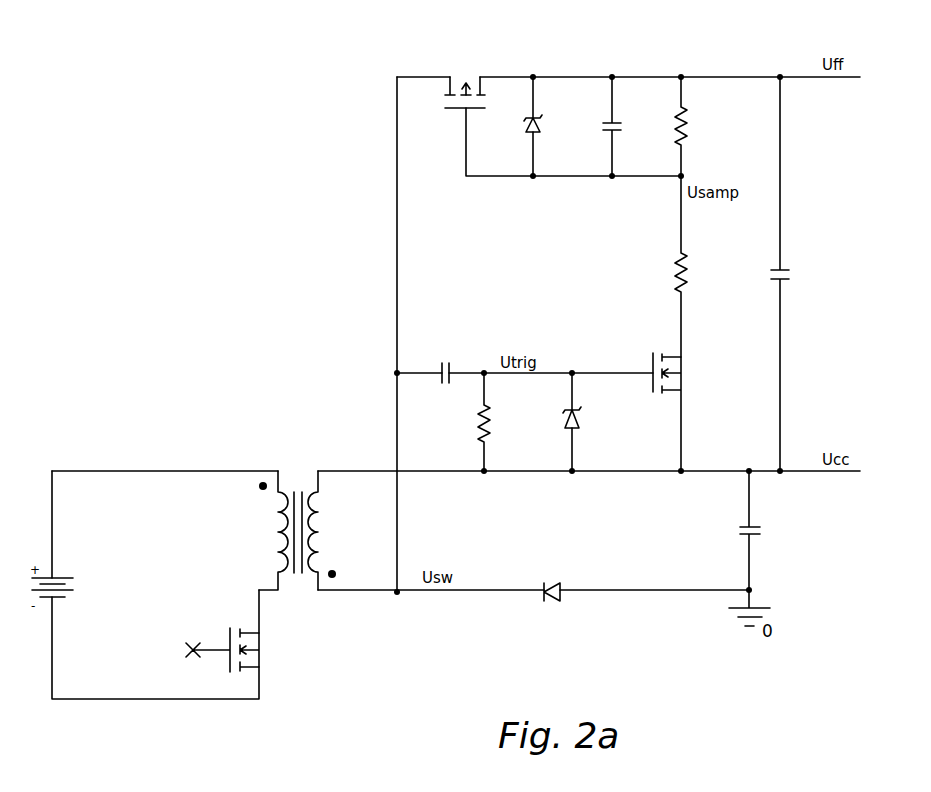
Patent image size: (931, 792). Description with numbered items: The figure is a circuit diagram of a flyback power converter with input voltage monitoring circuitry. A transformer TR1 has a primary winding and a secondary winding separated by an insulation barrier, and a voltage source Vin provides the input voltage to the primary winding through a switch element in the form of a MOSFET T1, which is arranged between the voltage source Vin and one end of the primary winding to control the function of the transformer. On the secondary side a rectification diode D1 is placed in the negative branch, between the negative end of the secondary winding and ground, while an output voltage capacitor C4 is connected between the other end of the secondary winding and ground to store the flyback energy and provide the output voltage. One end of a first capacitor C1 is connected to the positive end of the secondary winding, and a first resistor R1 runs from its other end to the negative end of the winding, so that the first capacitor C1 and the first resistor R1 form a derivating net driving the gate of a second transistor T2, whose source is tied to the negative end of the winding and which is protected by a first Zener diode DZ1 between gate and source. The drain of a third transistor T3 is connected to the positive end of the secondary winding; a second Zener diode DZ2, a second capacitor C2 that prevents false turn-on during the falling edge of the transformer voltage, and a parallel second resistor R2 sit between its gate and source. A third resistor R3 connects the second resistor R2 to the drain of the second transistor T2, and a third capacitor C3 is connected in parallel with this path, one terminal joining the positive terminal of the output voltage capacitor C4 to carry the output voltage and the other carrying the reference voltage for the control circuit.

The third transistor T3 is at (480, 77).
The second Zener diode DZ2 is at (540, 130).
The second capacitor C2 is at (619, 128).
The second resistor R2 is at (688, 112).
The third resistor R3 is at (688, 270).
The third capacitor C3 is at (790, 272).
The second transistor T2 is at (653, 360).
The first capacitor C1 is at (452, 367).
The first resistor R1 is at (490, 436).
The first Zener diode DZ1 is at (580, 422).
The transformer TR1 is at (308, 474).
The voltage source Vin is at (90, 570).
The MOSFET switch element T1 is at (258, 668).
The diode D1 is at (570, 562).
The output voltage capacitor C4 is at (762, 523).